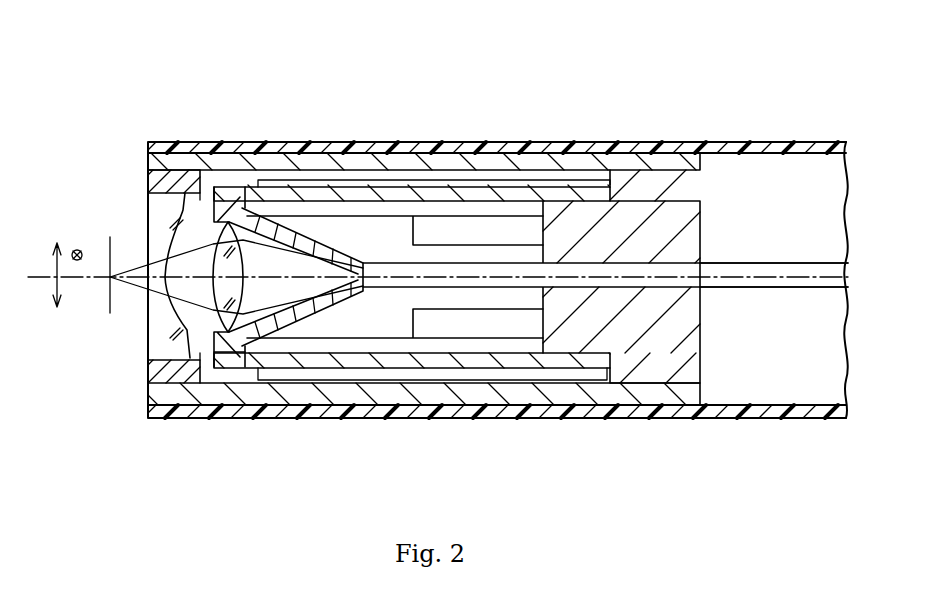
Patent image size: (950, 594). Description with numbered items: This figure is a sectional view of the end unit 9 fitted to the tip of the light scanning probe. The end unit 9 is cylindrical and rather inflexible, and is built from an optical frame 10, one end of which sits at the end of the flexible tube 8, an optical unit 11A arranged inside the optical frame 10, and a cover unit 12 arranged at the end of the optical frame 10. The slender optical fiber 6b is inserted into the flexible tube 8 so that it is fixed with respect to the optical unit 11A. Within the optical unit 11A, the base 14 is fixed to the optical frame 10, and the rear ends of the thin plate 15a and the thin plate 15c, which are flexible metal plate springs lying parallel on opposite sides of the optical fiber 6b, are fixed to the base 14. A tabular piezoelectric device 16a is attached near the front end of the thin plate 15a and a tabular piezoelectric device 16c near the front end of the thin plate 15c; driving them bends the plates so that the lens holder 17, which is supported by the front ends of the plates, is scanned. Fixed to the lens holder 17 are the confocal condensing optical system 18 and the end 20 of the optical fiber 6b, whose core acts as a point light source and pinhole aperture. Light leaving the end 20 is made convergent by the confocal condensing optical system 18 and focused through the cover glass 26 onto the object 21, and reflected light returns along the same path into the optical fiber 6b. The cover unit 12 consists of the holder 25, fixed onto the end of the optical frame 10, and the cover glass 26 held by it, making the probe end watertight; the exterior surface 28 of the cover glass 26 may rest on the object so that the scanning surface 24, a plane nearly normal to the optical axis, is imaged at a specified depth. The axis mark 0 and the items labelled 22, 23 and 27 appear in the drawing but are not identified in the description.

The optical fiber 6b is at (817, 268).
The flexible tube 8 is at (790, 150).
The end unit 9 is at (503, 120).
The optical frame 10 is at (662, 160).
The optical unit 11A is at (553, 178).
The cover unit 12 is at (135, 164).
The base 14 is at (660, 373).
The thin plate 15a is at (443, 186).
The thin plate 15c is at (473, 372).
The tabular piezoelectric device 16a is at (322, 186).
The tabular piezoelectric device 16c is at (310, 367).
The lens holder 17 is at (356, 300).
The confocal condensing optical system 18 is at (229, 240).
The end of optical fiber 20 is at (372, 258).
The object 21 is at (107, 290).
The scanning direction mark 22 is at (82, 248).
The scanning direction arrow 23 is at (50, 268).
The scanning surface 24 is at (122, 293).
The holder 25 is at (203, 367).
The cover glass 26 is at (168, 350).
The lower lens holder 27 is at (214, 362).
The exterior surface 28 is at (148, 343).
The optical axis 0 is at (740, 263).